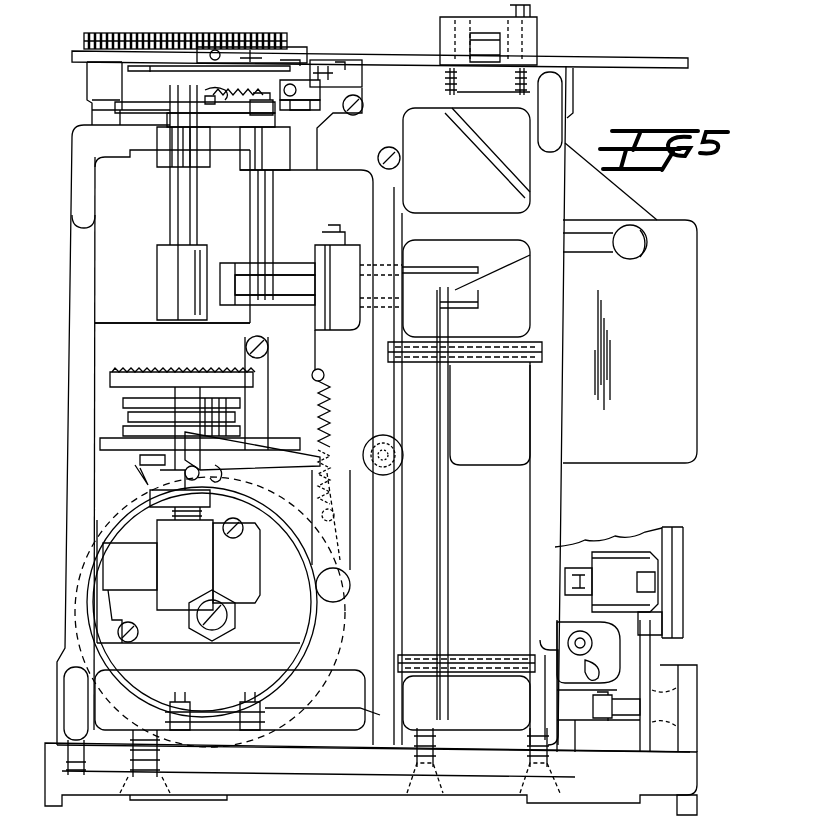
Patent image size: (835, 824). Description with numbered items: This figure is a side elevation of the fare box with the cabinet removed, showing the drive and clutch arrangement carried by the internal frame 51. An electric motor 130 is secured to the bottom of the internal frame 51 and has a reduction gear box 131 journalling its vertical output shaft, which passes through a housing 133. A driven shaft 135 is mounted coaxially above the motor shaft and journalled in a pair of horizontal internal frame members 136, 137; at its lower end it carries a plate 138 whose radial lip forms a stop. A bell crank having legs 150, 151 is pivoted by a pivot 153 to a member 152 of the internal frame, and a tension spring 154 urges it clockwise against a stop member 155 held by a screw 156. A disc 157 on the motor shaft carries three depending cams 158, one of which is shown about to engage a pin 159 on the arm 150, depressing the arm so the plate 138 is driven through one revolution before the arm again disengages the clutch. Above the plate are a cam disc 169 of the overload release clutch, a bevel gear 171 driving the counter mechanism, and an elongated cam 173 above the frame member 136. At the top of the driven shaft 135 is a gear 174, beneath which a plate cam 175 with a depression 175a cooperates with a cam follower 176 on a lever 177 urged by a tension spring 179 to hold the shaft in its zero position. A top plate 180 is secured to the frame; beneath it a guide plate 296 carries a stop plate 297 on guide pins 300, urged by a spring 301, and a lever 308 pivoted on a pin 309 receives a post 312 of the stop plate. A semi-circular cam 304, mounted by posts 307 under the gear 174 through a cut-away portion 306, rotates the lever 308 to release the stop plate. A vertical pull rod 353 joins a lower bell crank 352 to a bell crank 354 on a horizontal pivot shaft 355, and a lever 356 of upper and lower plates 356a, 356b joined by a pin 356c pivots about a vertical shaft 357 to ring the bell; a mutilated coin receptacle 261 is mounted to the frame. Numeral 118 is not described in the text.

The internal frame 51 is at (474, 793).
The bracket 118 is at (273, 108).
The electric motor 130 is at (254, 628).
The reduction gear box 131 is at (162, 532).
The housing 133 is at (210, 500).
The driven shaft 135 is at (170, 195).
The horizontal internal frame member 136 is at (122, 330).
The horizontal internal frame member 137 is at (230, 170).
The plate 138 is at (100, 443).
The bell crank leg 150 is at (283, 452).
The bell crank leg 151 is at (312, 548).
The member of the internal frame 152 is at (394, 510).
The pivot 153 is at (398, 446).
The tension spring 154 is at (335, 420).
The stop member 155 is at (262, 403).
The screw 156 is at (246, 348).
The disc 157 is at (140, 460).
The cam 158 is at (138, 480).
The pin 159 is at (190, 466).
The cam disc 169 is at (123, 402).
The bevel gear 171 is at (112, 373).
The elongated cam 173 is at (157, 278).
The gear 174 is at (100, 33).
The plate cam 175 is at (92, 110).
The depression 175a is at (150, 102).
The cam follower 176 is at (157, 130).
The lever 177 is at (232, 120).
The tension spring 179 is at (205, 94).
The top plate 180 is at (577, 60).
The mutilated coin receptacle 261 is at (695, 276).
The guide plate 296 is at (340, 68).
The stop plate 297 is at (345, 66).
The guide pin 300 is at (312, 108).
The spring 301 is at (212, 95).
The semi-circular shaped cam 304 is at (152, 66).
The cut-away portion 306 is at (252, 50).
The post 307 is at (210, 47).
The lever 308 is at (318, 68).
The pin 309 is at (288, 56).
The post 312 is at (292, 92).
The bell crank 352 is at (448, 680).
The vertical pull rod 353 is at (448, 608).
The bell crank 354 is at (448, 320).
The horizontal pivot shaft 355 is at (478, 362).
The lever 356 is at (310, 262).
The upper plate 356a is at (433, 266).
The lower plate 356b is at (478, 300).
The pin 356c is at (226, 270).
The vertical shaft 357 is at (328, 290).